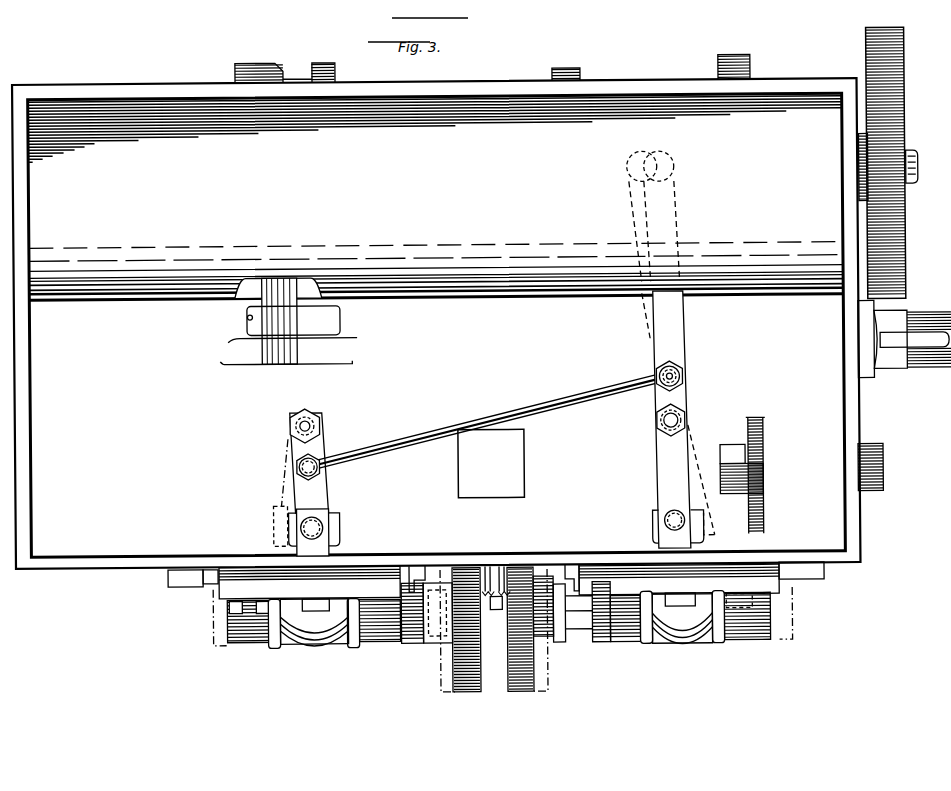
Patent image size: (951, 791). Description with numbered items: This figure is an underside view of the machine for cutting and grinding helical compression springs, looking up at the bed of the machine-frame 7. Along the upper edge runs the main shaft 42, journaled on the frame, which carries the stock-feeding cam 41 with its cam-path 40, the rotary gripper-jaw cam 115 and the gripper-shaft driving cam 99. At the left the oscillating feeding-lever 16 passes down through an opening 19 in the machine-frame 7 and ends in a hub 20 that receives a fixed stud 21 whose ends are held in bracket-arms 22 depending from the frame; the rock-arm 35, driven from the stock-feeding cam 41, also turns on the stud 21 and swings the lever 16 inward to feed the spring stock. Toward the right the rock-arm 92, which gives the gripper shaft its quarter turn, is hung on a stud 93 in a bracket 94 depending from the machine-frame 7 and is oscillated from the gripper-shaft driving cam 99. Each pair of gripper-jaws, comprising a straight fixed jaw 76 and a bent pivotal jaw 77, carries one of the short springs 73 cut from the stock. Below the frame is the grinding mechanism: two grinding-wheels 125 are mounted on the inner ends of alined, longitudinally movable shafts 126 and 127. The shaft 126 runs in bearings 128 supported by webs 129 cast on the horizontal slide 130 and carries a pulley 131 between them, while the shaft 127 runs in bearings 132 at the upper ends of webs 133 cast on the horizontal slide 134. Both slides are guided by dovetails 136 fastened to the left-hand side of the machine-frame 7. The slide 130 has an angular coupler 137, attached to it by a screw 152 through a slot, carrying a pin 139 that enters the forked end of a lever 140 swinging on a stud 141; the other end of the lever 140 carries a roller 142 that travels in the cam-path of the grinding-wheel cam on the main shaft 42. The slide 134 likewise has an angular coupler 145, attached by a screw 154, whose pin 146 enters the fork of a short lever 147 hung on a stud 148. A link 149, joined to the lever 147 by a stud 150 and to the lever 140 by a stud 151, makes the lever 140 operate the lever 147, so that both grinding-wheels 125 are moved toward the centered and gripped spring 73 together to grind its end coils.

The machine-frame 7 is at (141, 88).
The oscillating feeding-lever 16 is at (341, 320).
The opening 19 is at (246, 316).
The hub 20 is at (243, 337).
The fixed stud 21 is at (278, 356).
The bracket-arms 22 is at (298, 280).
The rock-arm 35 is at (357, 275).
The cam-path 40 is at (295, 78).
The stock-feeding cam 41 is at (268, 54).
The main shaft 42 is at (913, 186).
The springs 73 is at (484, 567).
The straight fixed jaw 76 is at (494, 610).
The bent pivotal jaw 77 is at (500, 565).
The rock-arm 92 is at (724, 447).
The stud 93 is at (749, 470).
The bracket 94 is at (763, 506).
The gripper-shaft driving cam 99 is at (745, 58).
The rotary gripper-jaw cam 115 is at (579, 70).
The grinding-wheels 125 is at (531, 690).
The shaft 126 is at (577, 640).
The shaft 127 is at (413, 645).
The bearings 128 is at (625, 630).
The webs 129 is at (603, 627).
The horizontal slide 130 is at (679, 579).
The pulley 131 is at (690, 620).
The bearings 132 is at (257, 612).
The webs 133 is at (272, 645).
The horizontal slide 134 is at (309, 582).
The dovetails 136 is at (185, 585).
The angular coupler 137 is at (651, 540).
The pin 139 is at (651, 516).
The lever 140 is at (653, 452).
The stud 141 is at (684, 414).
The roller 142 is at (677, 160).
The angular coupler 145 is at (321, 527).
The pin 146 is at (330, 513).
The short lever 147 is at (327, 490).
The stud 148 is at (312, 420).
The link 149 is at (505, 416).
The stud 150 is at (318, 462).
The stud 151 is at (680, 374).
The screw 152 is at (313, 611).
The screw 154 is at (677, 606).